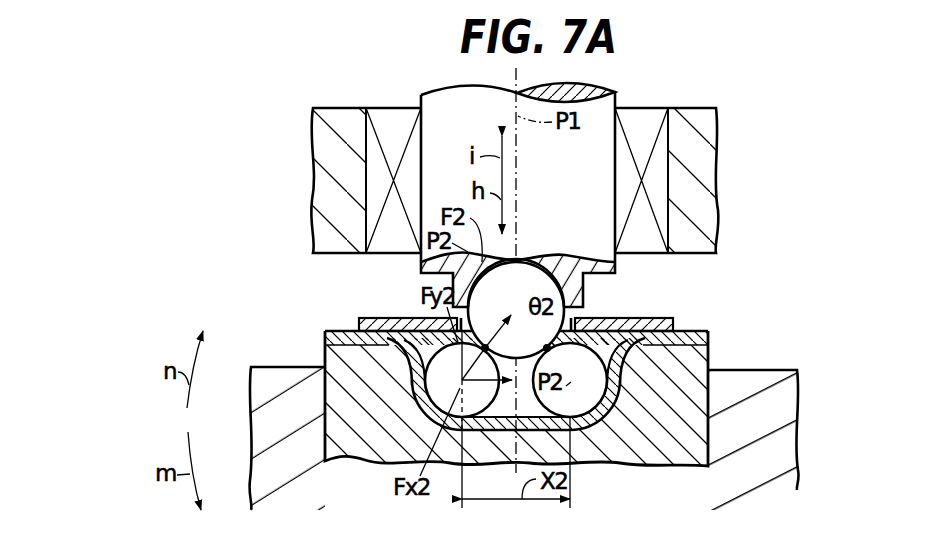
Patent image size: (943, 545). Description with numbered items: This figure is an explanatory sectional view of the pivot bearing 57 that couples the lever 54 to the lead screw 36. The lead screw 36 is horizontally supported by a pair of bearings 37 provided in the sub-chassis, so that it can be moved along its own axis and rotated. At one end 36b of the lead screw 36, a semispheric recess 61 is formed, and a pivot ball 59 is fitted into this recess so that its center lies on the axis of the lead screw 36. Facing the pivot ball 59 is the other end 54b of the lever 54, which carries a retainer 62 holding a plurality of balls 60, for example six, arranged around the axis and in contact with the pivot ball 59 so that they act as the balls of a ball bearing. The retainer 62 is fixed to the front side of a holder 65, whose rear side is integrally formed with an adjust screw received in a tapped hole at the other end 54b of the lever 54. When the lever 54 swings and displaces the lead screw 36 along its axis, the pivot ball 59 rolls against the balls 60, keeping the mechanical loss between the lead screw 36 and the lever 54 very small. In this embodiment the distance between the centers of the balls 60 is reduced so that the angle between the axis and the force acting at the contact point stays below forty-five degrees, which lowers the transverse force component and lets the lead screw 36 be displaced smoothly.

The lead screw 36 is at (606, 195).
The one end of the lead screw 36b is at (600, 185).
The bearings 37 is at (650, 226).
The lever 54 is at (747, 387).
The other end of the lever 54b is at (716, 345).
The pivot bearing 57 is at (358, 302).
The pivot ball 59 is at (525, 283).
The balls 60 is at (440, 358).
The semispheric recess 61 is at (552, 264).
The retainer 62 is at (626, 396).
The holder 65 is at (697, 433).